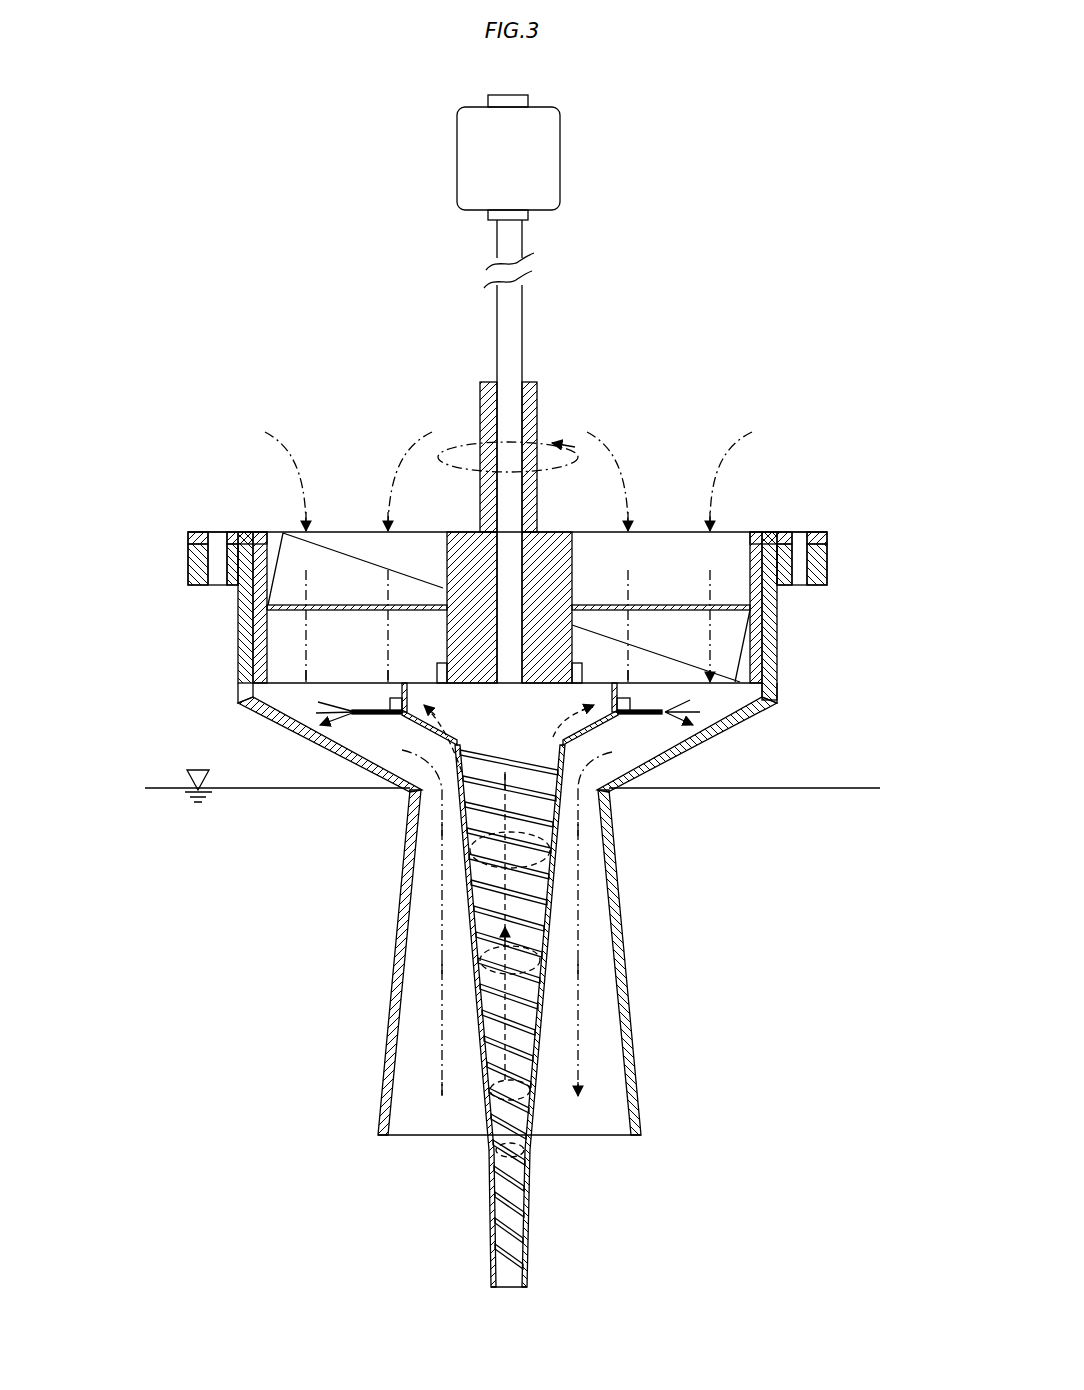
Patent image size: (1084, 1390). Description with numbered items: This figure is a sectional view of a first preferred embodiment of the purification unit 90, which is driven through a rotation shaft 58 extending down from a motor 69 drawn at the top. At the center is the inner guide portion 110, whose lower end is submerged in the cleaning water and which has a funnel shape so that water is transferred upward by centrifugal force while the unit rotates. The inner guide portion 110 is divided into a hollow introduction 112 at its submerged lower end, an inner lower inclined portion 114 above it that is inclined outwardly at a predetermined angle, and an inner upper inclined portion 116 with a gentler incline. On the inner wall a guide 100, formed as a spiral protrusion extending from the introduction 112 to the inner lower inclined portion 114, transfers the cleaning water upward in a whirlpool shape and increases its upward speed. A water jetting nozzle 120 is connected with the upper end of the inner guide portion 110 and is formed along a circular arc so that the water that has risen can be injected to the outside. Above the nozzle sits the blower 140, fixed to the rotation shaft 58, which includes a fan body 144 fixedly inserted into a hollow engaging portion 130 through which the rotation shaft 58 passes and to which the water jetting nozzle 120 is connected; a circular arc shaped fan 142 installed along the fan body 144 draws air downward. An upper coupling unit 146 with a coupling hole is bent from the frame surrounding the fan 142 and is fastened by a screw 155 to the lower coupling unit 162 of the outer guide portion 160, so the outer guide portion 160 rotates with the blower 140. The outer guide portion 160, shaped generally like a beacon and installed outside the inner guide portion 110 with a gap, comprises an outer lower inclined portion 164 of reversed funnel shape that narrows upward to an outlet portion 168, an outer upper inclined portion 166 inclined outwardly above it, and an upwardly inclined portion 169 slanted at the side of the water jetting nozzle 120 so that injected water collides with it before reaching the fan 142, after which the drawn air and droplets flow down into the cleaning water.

The motor 69 is at (560, 152).
The rotation shaft 58 is at (513, 243).
The blower 140 is at (360, 472).
The fan 142 is at (288, 555).
The fan body 144 is at (560, 543).
The upper coupling unit 146 is at (187, 532).
The screw 155 is at (213, 563).
The lower coupling unit 162 is at (197, 585).
The hollow engaging portion 130 is at (440, 662).
The upwardly inclined portion 169 is at (773, 712).
The outer upper inclined portion 166 is at (675, 763).
The water jetting nozzle 120 is at (657, 730).
The inner upper inclined portion 116 is at (597, 732).
The purification unit 90 is at (300, 896).
The outer guide portion 160 is at (654, 944).
The outer lower inclined portion 164 is at (635, 1078).
The outlet portion 168 is at (600, 1130).
The guide 100 is at (490, 1090).
The inner lower inclined portion 114 is at (540, 987).
The hollow introduction 112 is at (528, 1253).
The inner guide portion 110 is at (533, 1289).